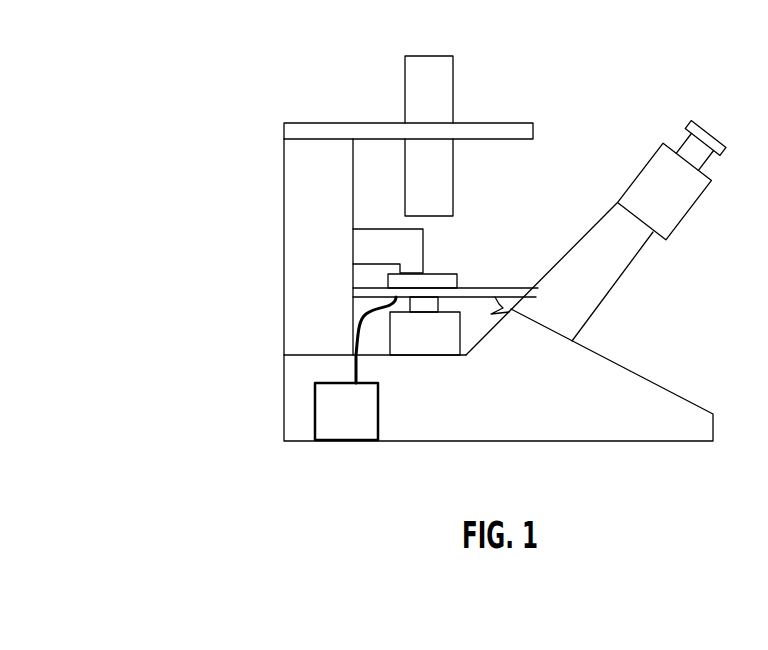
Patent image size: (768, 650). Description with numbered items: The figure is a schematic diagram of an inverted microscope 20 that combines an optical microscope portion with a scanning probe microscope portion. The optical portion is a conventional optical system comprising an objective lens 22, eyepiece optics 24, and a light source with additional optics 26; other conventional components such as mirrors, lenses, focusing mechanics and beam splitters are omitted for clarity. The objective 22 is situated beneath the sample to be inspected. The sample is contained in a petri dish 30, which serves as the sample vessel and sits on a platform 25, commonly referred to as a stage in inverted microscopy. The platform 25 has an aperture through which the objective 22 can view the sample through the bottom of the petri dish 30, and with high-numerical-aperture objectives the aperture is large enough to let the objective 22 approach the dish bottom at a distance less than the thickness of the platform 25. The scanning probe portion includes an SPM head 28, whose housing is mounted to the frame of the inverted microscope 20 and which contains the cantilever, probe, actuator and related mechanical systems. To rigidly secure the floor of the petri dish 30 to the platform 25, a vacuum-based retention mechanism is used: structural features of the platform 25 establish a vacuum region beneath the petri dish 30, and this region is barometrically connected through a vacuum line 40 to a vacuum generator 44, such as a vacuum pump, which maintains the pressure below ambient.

The inverted microscope 20 is at (90, 96).
The objective lens 22 is at (440, 309).
The eyepiece optics 24 is at (621, 146).
The platform 25 is at (537, 324).
The light and additional optics 26 is at (443, 68).
The SPM head 28 is at (373, 262).
The petri dish 30 is at (438, 274).
The vacuum line 40 is at (392, 299).
The vacuum generator 44 is at (352, 424).